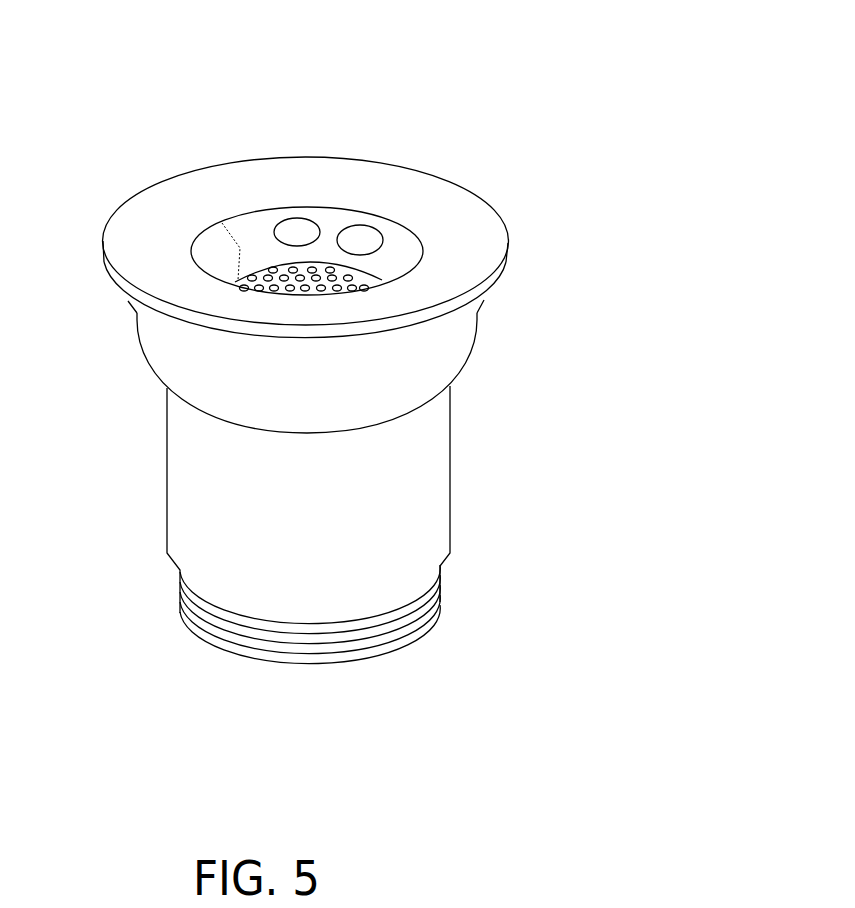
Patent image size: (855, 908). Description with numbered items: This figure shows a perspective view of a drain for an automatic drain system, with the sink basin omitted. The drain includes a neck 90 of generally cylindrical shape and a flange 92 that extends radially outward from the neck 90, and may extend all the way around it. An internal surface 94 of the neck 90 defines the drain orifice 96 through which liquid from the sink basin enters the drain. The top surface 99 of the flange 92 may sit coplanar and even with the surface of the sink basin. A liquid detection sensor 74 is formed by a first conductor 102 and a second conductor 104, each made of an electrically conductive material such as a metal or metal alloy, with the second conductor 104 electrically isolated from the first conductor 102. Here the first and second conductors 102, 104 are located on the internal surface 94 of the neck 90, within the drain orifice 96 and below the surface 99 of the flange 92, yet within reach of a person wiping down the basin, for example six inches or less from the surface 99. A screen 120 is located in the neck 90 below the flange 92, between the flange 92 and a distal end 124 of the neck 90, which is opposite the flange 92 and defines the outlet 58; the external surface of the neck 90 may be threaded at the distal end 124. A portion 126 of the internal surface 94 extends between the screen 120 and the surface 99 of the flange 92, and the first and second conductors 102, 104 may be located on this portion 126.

The outlet 58 is at (257, 657).
The liquid detection sensor 74 is at (351, 132).
The neck 90 is at (108, 305).
The flange 92 is at (272, 240).
The internal surface 94 is at (208, 265).
The drain orifice 96 is at (398, 238).
The surface 99 is at (240, 193).
The first conductor 102 is at (300, 225).
The second conductor 104 is at (368, 240).
The screen 120 is at (355, 268).
The distal end 124 is at (393, 640).
The portion 126 is at (240, 247).